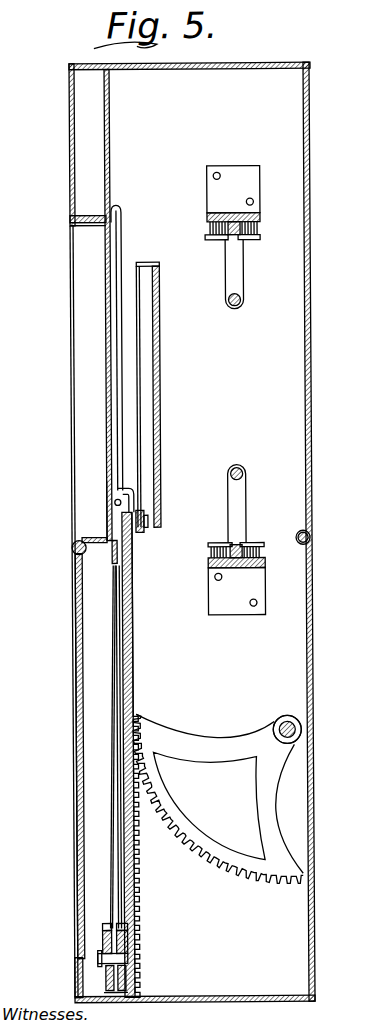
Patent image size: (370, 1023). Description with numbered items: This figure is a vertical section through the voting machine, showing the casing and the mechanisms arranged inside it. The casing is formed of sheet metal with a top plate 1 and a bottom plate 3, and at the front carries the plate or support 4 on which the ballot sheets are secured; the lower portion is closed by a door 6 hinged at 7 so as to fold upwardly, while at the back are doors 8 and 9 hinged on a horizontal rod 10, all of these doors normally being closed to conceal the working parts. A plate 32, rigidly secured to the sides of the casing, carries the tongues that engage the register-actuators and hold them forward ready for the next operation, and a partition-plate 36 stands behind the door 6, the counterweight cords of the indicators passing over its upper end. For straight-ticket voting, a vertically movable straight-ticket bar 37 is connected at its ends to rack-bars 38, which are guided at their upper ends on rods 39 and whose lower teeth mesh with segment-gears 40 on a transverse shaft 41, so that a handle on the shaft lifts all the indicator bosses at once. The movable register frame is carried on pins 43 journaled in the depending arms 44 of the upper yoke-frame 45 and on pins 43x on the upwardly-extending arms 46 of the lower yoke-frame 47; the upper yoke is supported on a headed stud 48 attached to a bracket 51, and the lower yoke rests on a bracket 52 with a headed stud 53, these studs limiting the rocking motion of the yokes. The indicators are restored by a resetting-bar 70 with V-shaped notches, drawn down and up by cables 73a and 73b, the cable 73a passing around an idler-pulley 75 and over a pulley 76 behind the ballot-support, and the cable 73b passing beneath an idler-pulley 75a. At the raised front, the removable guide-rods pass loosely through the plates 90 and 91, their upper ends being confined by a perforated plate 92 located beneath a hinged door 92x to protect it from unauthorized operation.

The top plate 1 is at (245, 67).
The bottom plate 3 is at (230, 1000).
The plate or support 4 is at (107, 339).
The door 6 is at (74, 895).
The hinge 7 is at (72, 548).
The door 8 is at (309, 367).
The door 9 is at (312, 713).
The horizontally-extending rod 10 is at (311, 540).
The plate 32 is at (162, 370).
The partition-plate 36 is at (133, 610).
The straight-ticket bar 37 is at (141, 528).
The rack-bar 38 is at (136, 664).
The rod 39 is at (123, 233).
The segment-gear 40 is at (170, 814).
The shaft 41 is at (285, 716).
The pin 43 is at (243, 300).
The pin 43x is at (258, 463).
The depending arm 44 is at (228, 272).
The upper yoke-frame 45 is at (236, 218).
The upwardly-extending arm 46 is at (238, 503).
The lower yoke-frame 47 is at (258, 557).
The headed stud 48 is at (217, 238).
The bracket 51 is at (207, 188).
The bracket 52 is at (236, 591).
The headed stud 53 is at (225, 543).
The resetting-bar 70 is at (112, 558).
The cable 73a is at (118, 815).
The cable 73b is at (110, 850).
The idler-pulley 75 is at (118, 935).
The idler-pulley 75a is at (105, 980).
The pulley 76 is at (108, 520).
The plate 90 is at (90, 538).
The plate 91 is at (85, 228).
The plate 92 is at (100, 218).
The hinged door 92x is at (72, 124).